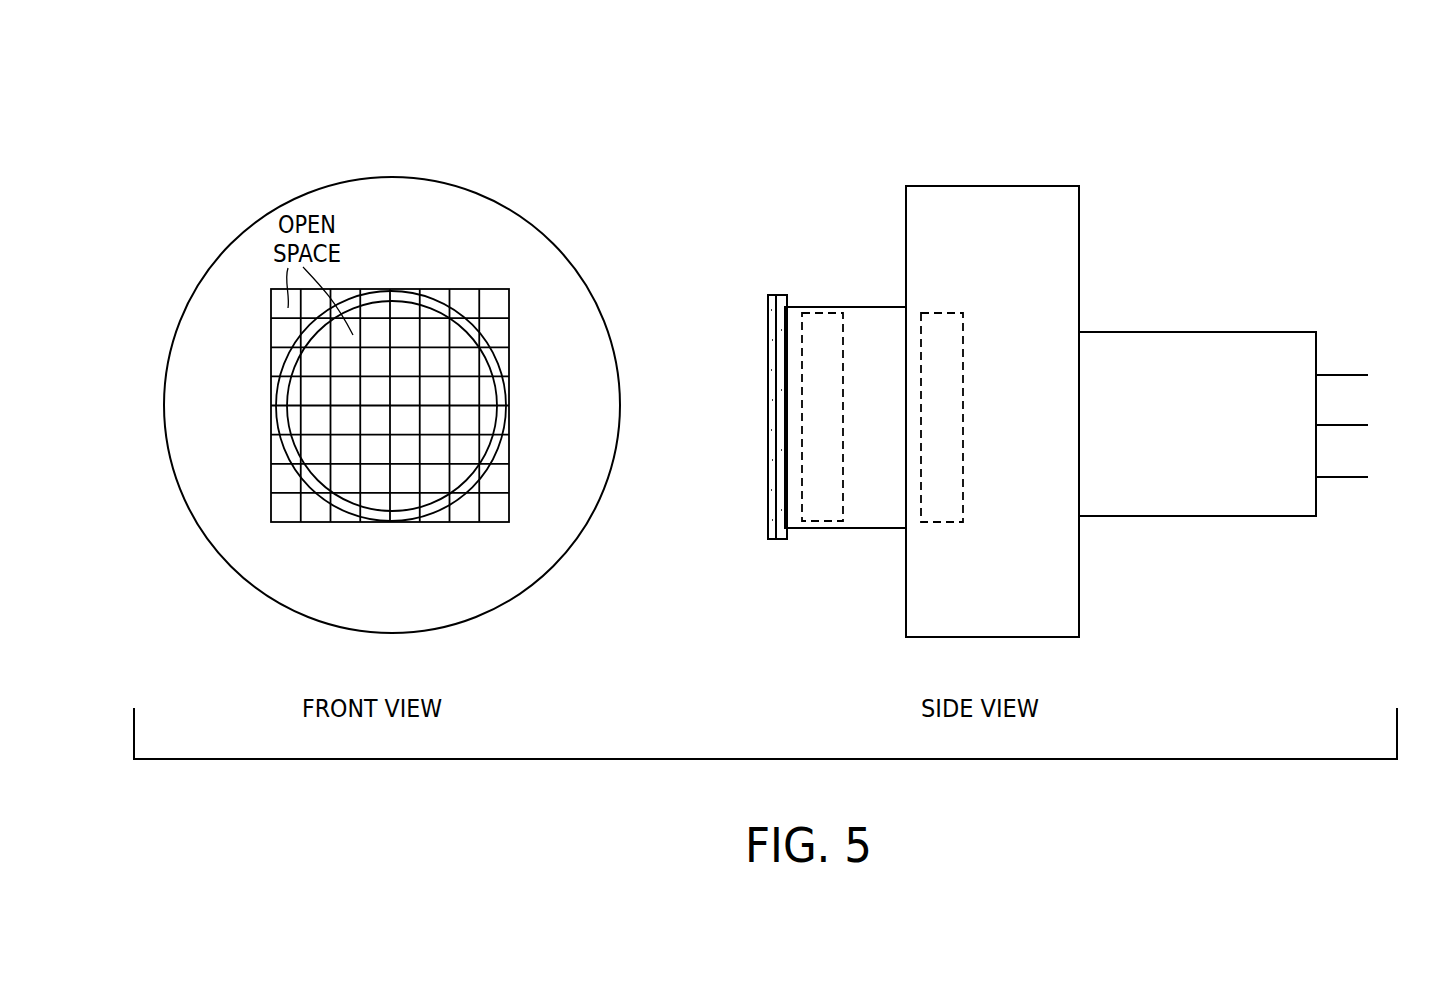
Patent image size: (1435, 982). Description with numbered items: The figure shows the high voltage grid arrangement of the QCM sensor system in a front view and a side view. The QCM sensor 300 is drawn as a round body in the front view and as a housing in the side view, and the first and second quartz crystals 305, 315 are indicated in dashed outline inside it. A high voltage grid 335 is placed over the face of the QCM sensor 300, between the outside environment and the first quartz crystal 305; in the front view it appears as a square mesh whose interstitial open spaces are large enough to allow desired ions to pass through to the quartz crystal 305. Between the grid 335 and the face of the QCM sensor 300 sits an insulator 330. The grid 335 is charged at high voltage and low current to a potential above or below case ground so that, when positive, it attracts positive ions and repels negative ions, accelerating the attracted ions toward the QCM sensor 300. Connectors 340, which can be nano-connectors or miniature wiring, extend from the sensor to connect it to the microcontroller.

The QCM sensor 300 is at (523, 222).
The first quartz crystal 305 is at (824, 313).
The second quartz crystal 315 is at (950, 313).
The insulator 330 is at (784, 539).
The high voltage grid 335 is at (492, 520).
The connectors 340 is at (1368, 375).